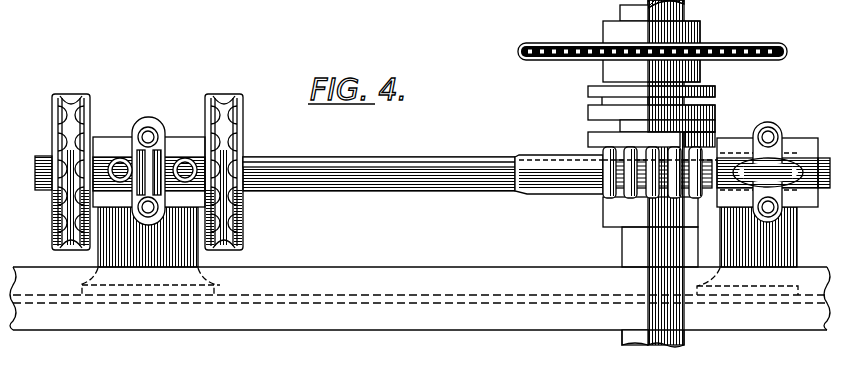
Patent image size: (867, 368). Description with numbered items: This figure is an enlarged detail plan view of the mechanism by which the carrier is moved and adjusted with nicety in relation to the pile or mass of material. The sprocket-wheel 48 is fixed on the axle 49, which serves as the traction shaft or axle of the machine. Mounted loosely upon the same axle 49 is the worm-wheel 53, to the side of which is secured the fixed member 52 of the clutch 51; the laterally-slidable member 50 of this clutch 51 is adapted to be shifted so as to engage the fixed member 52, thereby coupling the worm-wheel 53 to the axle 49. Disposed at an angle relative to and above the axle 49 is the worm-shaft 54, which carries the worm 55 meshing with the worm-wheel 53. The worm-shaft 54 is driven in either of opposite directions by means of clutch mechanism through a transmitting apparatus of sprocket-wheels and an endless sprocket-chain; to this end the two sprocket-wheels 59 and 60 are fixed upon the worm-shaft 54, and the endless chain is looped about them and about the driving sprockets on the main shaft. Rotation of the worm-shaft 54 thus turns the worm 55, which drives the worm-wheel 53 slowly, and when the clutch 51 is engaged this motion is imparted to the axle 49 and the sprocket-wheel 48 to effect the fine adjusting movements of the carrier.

The sprocket-wheel 48 is at (576, 56).
The axle 49 is at (684, 14).
The laterally-slidable member 50 is at (715, 109).
The clutch 51 is at (636, 126).
The fixed member 52 is at (706, 136).
The worm-wheel 53 is at (538, 145).
The worm-shaft 54 is at (379, 186).
The worm 55 is at (606, 191).
The sprocket-wheel 59 is at (243, 117).
The sprocket-wheel 60 is at (90, 107).